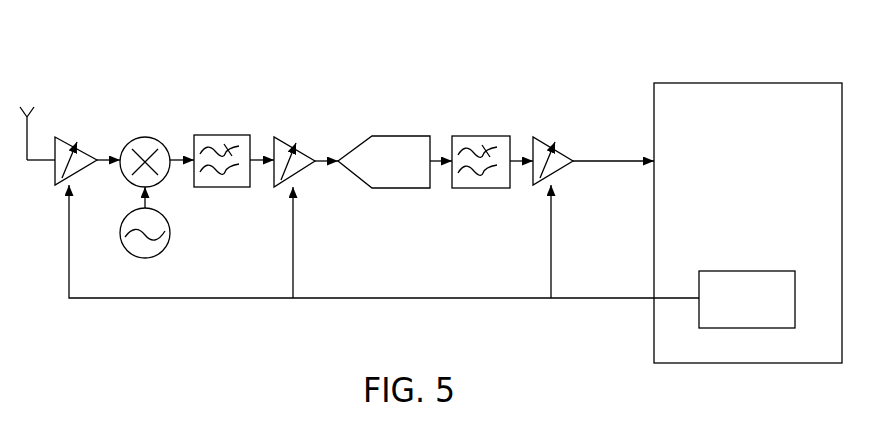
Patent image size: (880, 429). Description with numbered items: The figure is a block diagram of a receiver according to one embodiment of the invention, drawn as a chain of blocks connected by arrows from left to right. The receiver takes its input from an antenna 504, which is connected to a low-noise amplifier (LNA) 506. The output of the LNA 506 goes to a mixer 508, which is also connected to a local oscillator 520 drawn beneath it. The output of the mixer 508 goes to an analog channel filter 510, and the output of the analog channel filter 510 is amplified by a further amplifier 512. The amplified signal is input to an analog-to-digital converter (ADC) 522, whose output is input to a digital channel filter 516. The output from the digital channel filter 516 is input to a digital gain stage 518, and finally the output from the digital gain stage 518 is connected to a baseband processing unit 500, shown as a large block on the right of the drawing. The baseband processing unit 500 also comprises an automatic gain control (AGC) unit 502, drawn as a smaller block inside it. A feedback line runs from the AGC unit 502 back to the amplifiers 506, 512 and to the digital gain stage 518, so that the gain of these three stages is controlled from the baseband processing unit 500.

The baseband processing unit 500 is at (745, 83).
The automatic gain control (AGC) unit 502 is at (720, 271).
The antenna 504 is at (29, 106).
The amplifier (LNA) 506 is at (68, 142).
The mixer 508 is at (146, 137).
The analog channel filter 510 is at (225, 135).
The amplifier 512 is at (287, 142).
The digital channel filter 516 is at (483, 136).
The digital gain stage 518 is at (547, 142).
The local oscillator 520 is at (170, 243).
The analog-to-digital converter (ADC) 522 is at (395, 136).